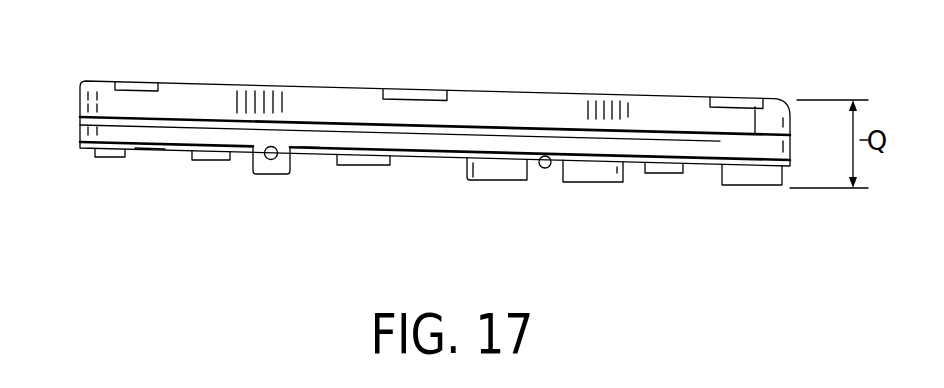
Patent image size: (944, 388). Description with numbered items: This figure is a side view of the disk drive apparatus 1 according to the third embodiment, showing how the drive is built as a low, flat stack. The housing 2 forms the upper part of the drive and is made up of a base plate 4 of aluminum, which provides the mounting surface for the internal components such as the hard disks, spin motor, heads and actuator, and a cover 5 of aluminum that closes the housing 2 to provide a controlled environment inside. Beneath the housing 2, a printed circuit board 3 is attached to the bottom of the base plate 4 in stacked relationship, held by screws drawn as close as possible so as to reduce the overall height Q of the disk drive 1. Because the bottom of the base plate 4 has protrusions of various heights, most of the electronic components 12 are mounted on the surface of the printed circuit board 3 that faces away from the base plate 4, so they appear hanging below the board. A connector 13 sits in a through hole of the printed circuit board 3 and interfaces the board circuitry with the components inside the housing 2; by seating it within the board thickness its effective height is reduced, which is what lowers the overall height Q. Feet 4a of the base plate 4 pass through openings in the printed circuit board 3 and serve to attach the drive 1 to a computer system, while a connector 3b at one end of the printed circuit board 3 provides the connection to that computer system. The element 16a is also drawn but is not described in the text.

The disk drive apparatus 1 is at (700, 81).
The housing 2 is at (572, 110).
The printed circuit board 3 is at (148, 149).
The connector 3b is at (743, 183).
The base plate 4 is at (307, 147).
The feet 4a is at (273, 167).
The cover 5 is at (335, 103).
The electronic components 12 is at (200, 162).
The connector 13 is at (110, 160).
The projection 16a is at (578, 176).